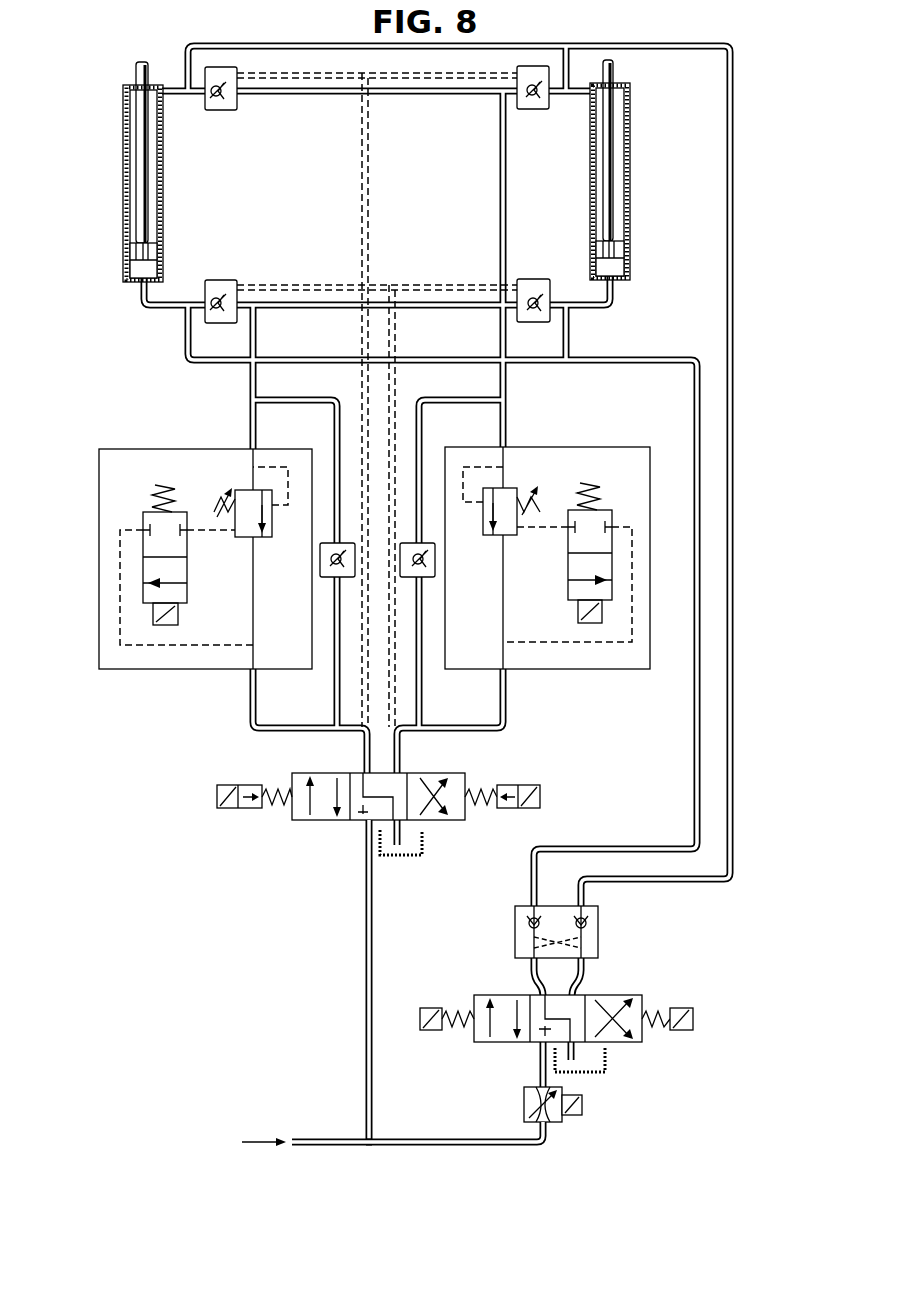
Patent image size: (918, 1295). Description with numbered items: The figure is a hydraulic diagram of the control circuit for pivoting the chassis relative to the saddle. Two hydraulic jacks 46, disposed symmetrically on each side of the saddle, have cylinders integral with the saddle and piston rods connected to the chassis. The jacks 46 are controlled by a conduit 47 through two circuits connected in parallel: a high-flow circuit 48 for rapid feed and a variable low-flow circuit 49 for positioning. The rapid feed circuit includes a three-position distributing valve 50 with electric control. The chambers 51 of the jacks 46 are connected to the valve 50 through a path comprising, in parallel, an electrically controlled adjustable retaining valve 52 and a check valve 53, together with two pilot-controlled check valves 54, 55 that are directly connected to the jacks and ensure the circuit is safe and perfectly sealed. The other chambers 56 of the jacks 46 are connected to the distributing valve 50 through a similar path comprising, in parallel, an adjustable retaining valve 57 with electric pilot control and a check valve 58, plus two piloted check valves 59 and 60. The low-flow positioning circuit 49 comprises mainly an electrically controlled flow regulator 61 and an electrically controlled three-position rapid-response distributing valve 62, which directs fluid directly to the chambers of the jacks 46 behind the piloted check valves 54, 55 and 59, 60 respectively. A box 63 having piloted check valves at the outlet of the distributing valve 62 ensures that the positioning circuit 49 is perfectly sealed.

The hydraulic jack 46 is at (126, 199).
The conduit 47 is at (318, 1137).
The high-flow circuit 48 is at (365, 975).
The variable low-flow circuit 49 is at (462, 1136).
The three-position distributing valve 50 is at (328, 820).
The chambers 51 is at (140, 270).
The adjustable retaining valve 52 is at (192, 670).
The check valve 53 is at (330, 574).
The piloted check valve 54 is at (224, 286).
The piloted check valve 55 is at (533, 286).
The other chambers 56 is at (133, 134).
The adjustable retaining valve 57 is at (547, 670).
The check valve 58 is at (428, 574).
The piloted check valve 59 is at (228, 104).
The piloted check valve 60 is at (528, 104).
The flow regulator 61 is at (570, 1084).
The three-position rapid-response distributing valve 62 is at (605, 989).
The box having piloted check valves 63 is at (592, 940).